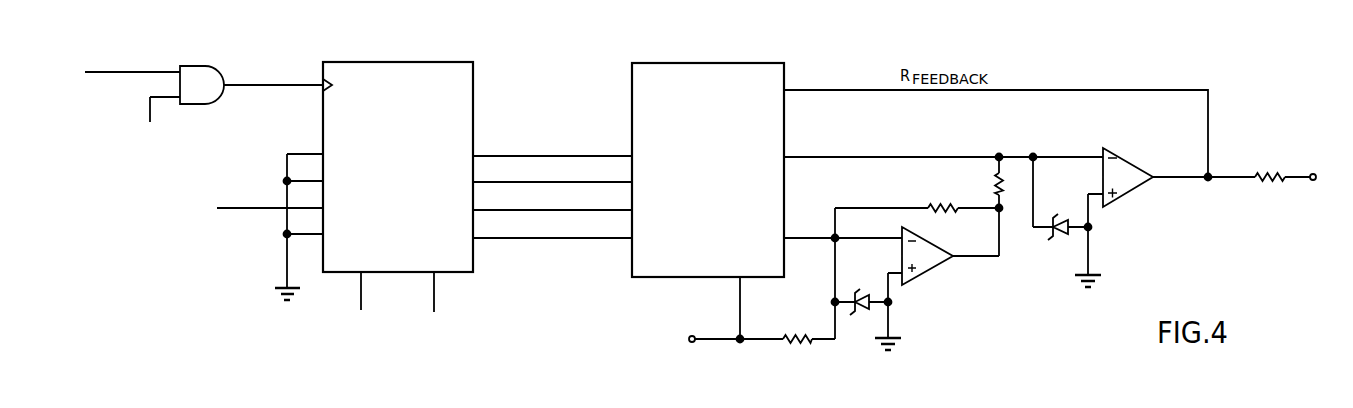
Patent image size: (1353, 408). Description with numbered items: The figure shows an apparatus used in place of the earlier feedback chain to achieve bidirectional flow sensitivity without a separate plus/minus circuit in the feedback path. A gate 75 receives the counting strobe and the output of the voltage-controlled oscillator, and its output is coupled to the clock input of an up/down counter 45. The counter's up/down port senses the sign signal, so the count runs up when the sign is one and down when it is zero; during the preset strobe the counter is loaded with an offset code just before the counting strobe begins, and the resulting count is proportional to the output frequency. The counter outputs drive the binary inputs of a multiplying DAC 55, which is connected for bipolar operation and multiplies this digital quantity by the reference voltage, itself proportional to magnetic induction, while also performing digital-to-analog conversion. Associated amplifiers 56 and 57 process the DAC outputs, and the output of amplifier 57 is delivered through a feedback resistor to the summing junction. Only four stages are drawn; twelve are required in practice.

The gate 75 is at (218, 69).
The up/down counter 45 is at (437, 62).
The multiplying DAC 55 is at (734, 63).
The amplifier 56 is at (917, 281).
The amplifier 57 is at (1121, 198).